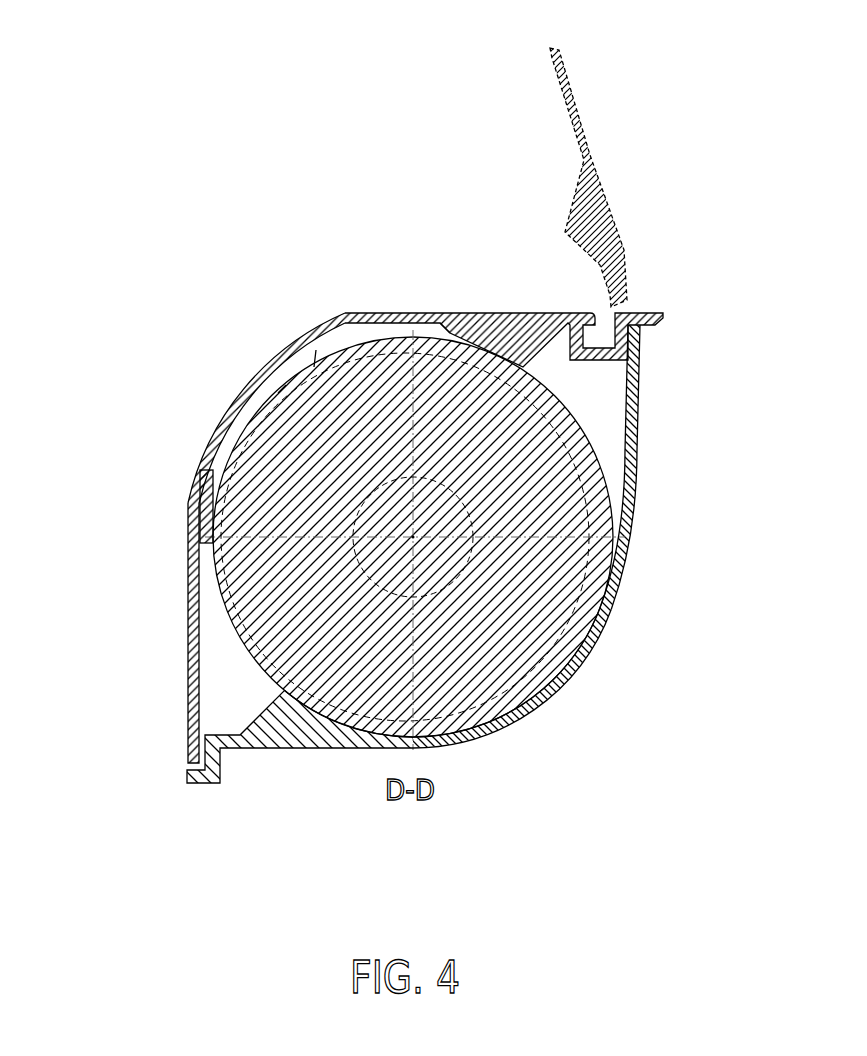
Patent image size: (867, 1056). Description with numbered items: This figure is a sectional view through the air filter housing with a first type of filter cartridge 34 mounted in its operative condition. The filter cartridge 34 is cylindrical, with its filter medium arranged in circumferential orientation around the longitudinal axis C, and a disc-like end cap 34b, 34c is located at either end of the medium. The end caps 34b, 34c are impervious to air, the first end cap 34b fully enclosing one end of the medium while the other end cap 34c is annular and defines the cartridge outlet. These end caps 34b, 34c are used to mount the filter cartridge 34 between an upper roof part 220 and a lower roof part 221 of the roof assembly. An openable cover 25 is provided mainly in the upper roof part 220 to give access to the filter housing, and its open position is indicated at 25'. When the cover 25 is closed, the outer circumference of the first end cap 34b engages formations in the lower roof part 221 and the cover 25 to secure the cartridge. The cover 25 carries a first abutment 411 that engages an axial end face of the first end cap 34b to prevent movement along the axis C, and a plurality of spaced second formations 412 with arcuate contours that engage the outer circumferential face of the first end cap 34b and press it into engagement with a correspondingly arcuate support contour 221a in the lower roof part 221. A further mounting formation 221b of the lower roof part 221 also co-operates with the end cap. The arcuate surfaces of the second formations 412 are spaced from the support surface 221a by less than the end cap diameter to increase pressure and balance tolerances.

The openable cover 25 is at (235, 536).
The open position of cover 25' is at (595, 165).
The first abutment 411 is at (368, 357).
The second formations 412 is at (480, 350).
The upper roof part 220 is at (641, 313).
The lower roof part 221 is at (305, 742).
The arcuate support contour 221a is at (524, 720).
The mounting formation of lower roof part 221b is at (622, 480).
The filter cartridge 34 is at (252, 628).
The first end cap 34b is at (530, 513).
The second end cap 34c is at (413, 537).
The axis C is at (413, 537).